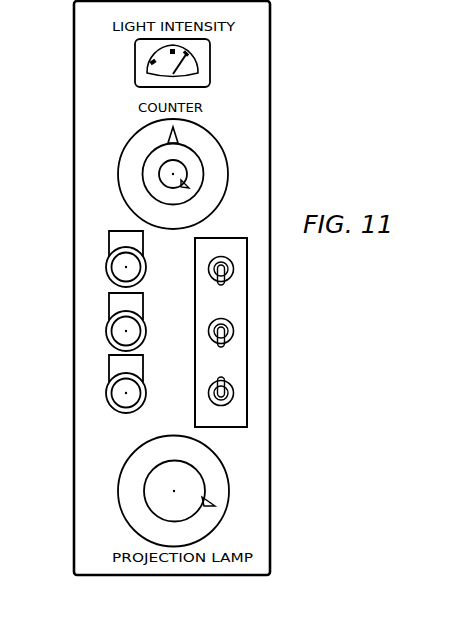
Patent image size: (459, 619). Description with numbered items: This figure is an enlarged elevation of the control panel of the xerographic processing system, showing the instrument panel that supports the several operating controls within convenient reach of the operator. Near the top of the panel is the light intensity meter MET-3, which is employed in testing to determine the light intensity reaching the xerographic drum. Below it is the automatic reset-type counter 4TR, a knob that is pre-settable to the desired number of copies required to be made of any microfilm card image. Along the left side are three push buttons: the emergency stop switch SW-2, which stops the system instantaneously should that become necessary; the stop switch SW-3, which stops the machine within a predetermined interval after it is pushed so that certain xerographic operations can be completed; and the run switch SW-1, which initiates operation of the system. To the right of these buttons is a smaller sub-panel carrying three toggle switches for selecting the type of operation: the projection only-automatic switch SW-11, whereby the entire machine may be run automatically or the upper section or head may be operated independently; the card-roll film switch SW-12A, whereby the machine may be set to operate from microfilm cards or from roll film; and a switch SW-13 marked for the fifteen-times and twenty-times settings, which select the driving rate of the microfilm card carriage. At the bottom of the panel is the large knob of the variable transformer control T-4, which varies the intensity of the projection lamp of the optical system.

The light intensity meter MET-3 is at (208, 62).
The automatic reset-type counter 4TR is at (222, 170).
The emergency stop switch SW-2 is at (106, 267).
The stop switch SW-3 is at (106, 331).
The run switch SW-1 is at (106, 393).
The projection only-automatic switch SW-11 is at (234, 268).
The card-roll film switch SW-12A is at (234, 331).
The 15X / 20X magnification toggle switch SW-13 is at (234, 393).
The variable transformer control T-4 is at (222, 491).